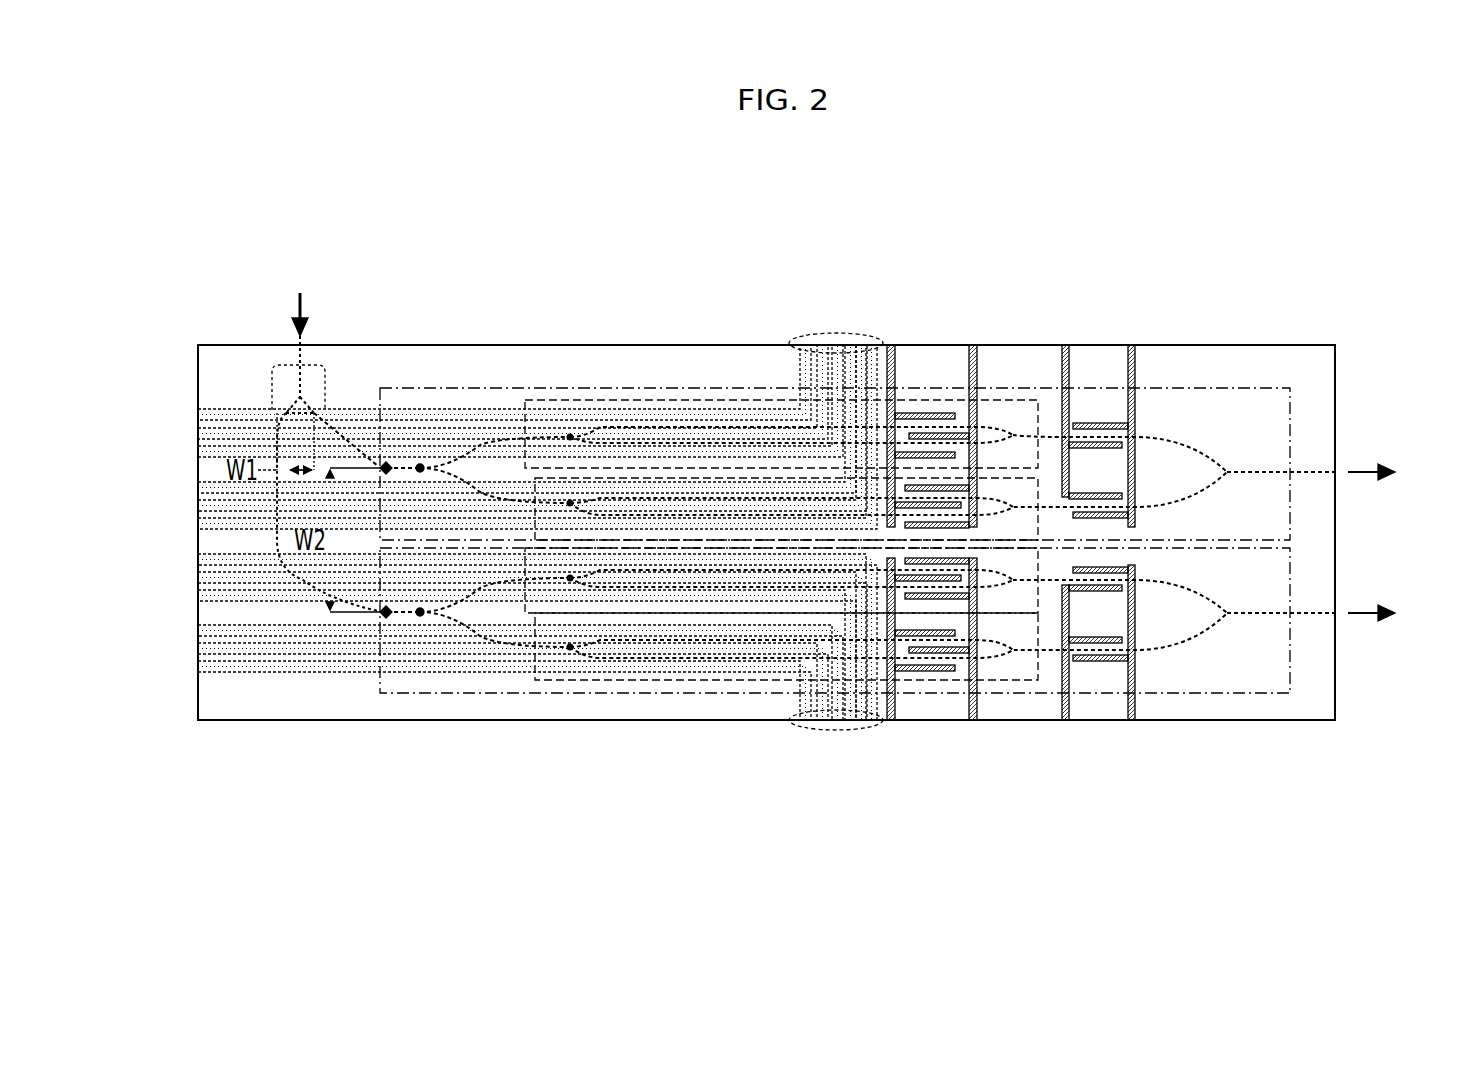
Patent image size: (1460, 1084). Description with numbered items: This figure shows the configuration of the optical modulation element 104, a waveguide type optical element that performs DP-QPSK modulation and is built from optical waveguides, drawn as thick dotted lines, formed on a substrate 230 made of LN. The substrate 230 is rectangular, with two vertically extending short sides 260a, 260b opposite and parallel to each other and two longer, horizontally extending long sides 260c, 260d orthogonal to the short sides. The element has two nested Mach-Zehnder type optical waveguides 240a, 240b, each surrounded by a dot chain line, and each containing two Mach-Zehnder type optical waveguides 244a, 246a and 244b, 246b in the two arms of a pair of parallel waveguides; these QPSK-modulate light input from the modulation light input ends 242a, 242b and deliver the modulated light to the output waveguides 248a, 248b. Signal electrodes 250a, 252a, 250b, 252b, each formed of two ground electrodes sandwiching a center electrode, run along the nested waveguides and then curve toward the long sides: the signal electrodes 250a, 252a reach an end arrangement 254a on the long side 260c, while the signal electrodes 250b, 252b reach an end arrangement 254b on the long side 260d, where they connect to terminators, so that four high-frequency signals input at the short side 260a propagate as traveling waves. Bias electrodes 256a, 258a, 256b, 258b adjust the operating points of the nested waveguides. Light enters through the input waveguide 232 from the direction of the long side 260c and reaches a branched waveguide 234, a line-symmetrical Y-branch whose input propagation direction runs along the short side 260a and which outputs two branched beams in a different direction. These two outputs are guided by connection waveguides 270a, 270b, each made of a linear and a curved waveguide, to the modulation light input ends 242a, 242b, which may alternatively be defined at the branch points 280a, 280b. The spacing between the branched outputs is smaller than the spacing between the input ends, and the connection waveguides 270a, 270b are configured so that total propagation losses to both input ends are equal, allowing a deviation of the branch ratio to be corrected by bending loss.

The optical modulation element 104 is at (310, 237).
The substrate 230 is at (1255, 362).
The input waveguide 232 is at (297, 350).
The branched waveguide 234 is at (275, 370).
The nested Mach-Zehnder type optical waveguide 240a is at (555, 388).
The nested Mach-Zehnder type optical waveguide 240b is at (380, 693).
The modulation light input end 242a is at (384, 462).
The modulation light input end 242b is at (380, 618).
The Mach-Zehnder type optical waveguide 244a is at (690, 400).
The Mach-Zehnder type optical waveguide 244b is at (590, 720).
The Mach-Zehnder type optical waveguide 246a is at (590, 400).
The Mach-Zehnder type optical waveguide 246b is at (540, 720).
The output waveguide 248a is at (1362, 466).
The output waveguide 248b is at (1362, 607).
The signal electrode 250a is at (197, 409).
The signal electrode 250b is at (197, 625).
The signal electrode 252a is at (197, 482).
The signal electrode 252b is at (197, 554).
The end arrangement 254a is at (820, 334).
The end arrangement 254b is at (840, 731).
The bias electrode 256a is at (887, 345).
The bias electrode 256b is at (887, 720).
The bias electrode 258a is at (1062, 345).
The bias electrode 258b is at (1062, 720).
The short side 260a is at (198, 690).
The short side 260b is at (1335, 720).
The long side 260c is at (738, 345).
The long side 260d is at (638, 720).
The connection waveguide 270a is at (340, 445).
The connection waveguide 270b is at (277, 540).
The branch point 280a is at (422, 462).
The branch point 280b is at (422, 618).